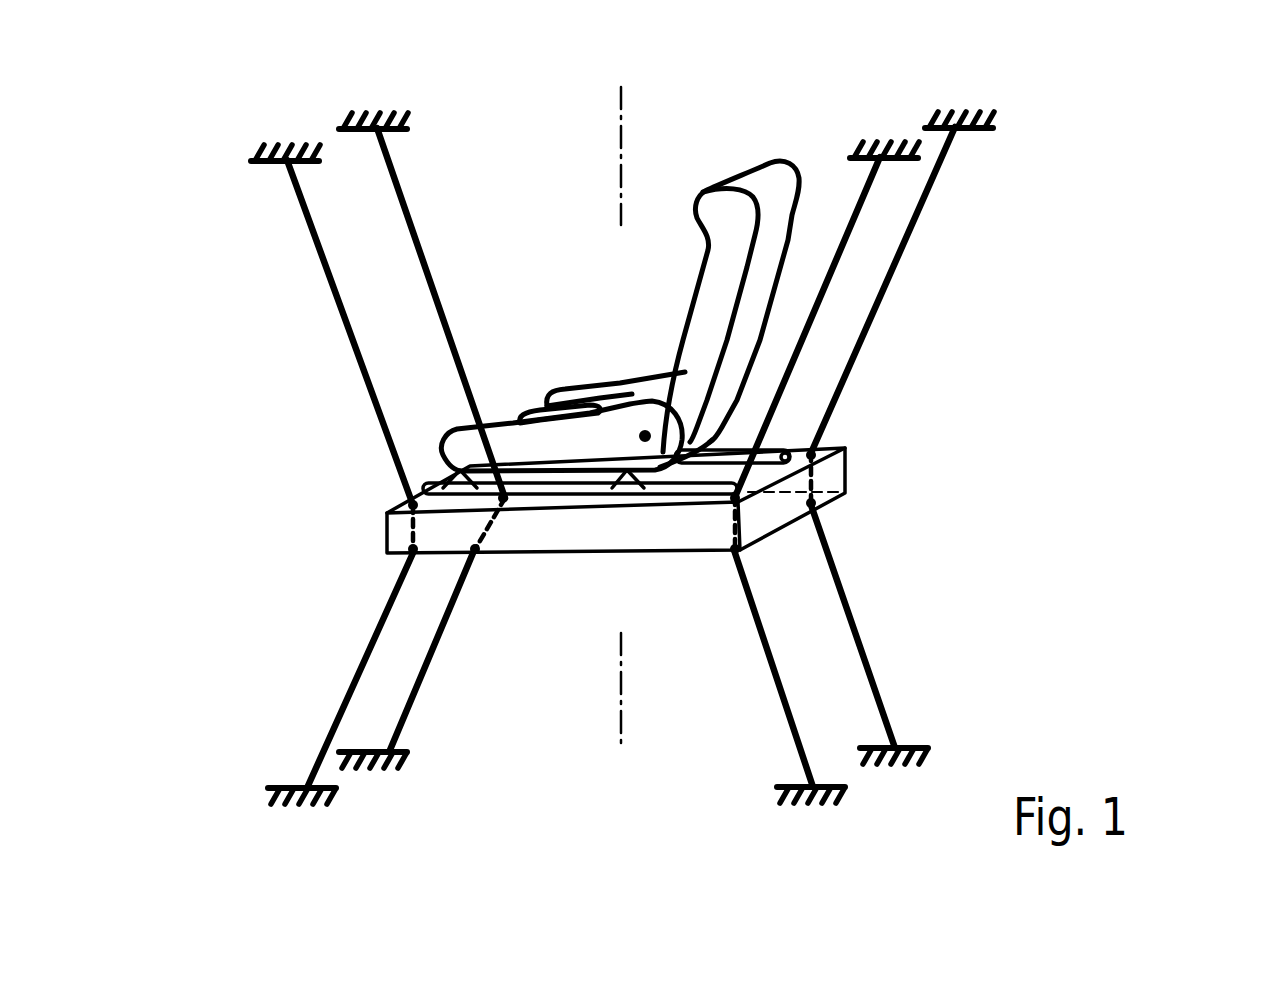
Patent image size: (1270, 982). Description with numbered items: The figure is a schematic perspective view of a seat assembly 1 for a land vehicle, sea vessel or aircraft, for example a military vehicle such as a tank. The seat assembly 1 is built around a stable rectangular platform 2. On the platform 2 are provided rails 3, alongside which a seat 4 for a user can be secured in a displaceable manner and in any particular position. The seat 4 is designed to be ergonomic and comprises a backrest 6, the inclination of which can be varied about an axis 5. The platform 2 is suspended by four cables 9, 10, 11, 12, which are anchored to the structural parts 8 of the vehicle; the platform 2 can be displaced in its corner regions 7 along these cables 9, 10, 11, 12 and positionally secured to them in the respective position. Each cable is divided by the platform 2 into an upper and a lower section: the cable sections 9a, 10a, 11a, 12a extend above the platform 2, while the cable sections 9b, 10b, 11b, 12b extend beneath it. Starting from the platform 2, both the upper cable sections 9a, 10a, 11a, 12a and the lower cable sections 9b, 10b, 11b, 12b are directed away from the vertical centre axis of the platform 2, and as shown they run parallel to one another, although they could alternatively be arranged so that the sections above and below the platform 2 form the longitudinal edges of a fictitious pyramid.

The seat assembly 1 is at (1100, 226).
The platform 2 is at (566, 562).
The rails 3 is at (535, 493).
The seat 4 is at (592, 380).
The axis 5 is at (645, 434).
The backrest 6 is at (712, 290).
The corner regions 7 is at (412, 507).
The structural parts 8 is at (287, 156).
The cable 9 is at (299, 221).
The cable section 9a is at (343, 330).
The cable section 9b is at (376, 640).
The cable 10 is at (408, 172).
The cable section 10a is at (425, 237).
The cable section 10b is at (433, 643).
The cable 11 is at (940, 179).
The cable section 11a is at (898, 272).
The cable section 11b is at (842, 588).
The cable 12 is at (895, 228).
The cable section 12a is at (806, 323).
The cable section 12b is at (763, 652).